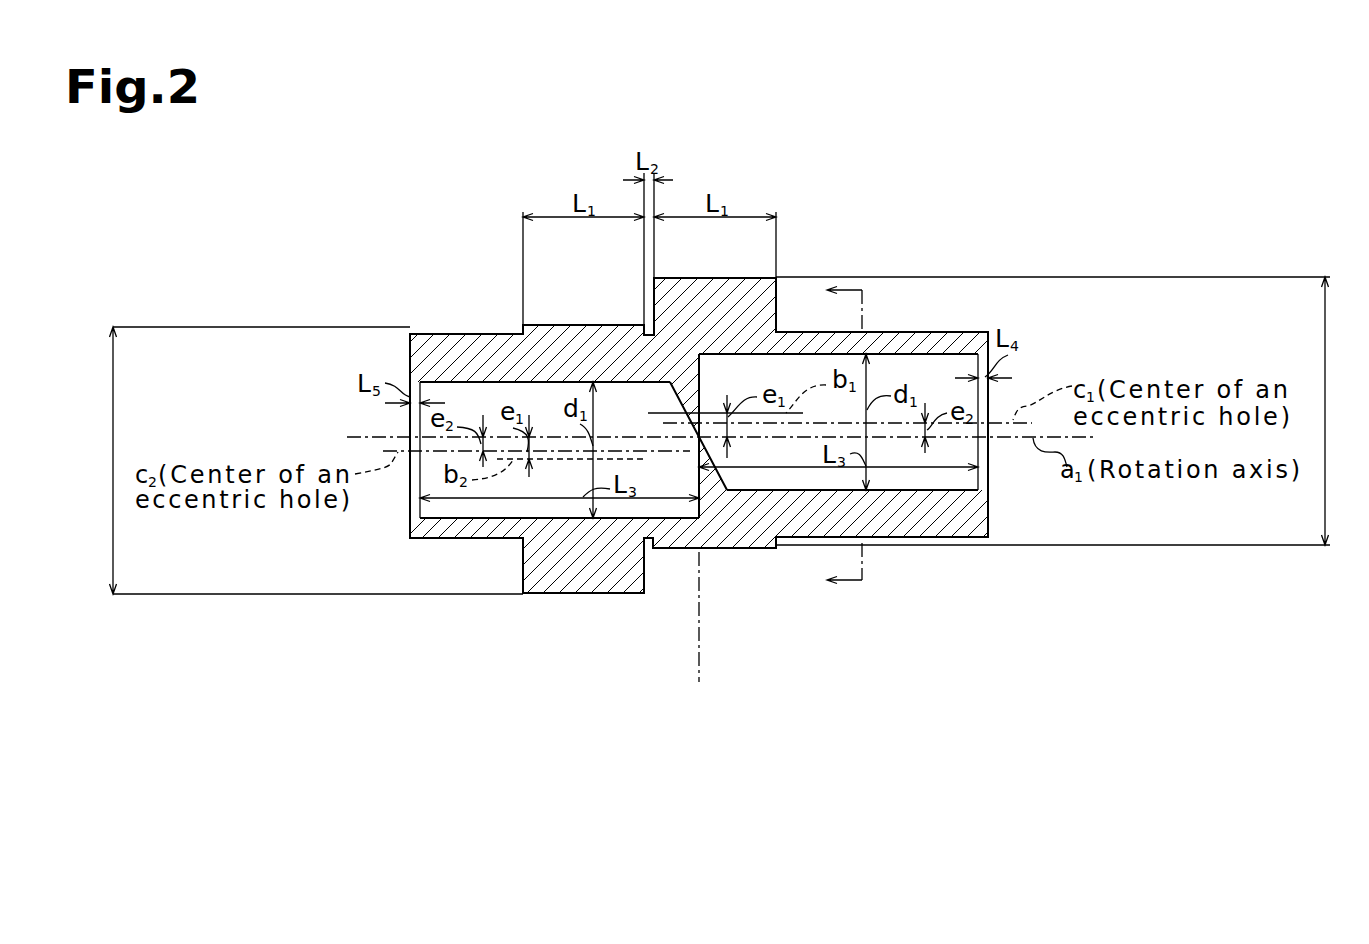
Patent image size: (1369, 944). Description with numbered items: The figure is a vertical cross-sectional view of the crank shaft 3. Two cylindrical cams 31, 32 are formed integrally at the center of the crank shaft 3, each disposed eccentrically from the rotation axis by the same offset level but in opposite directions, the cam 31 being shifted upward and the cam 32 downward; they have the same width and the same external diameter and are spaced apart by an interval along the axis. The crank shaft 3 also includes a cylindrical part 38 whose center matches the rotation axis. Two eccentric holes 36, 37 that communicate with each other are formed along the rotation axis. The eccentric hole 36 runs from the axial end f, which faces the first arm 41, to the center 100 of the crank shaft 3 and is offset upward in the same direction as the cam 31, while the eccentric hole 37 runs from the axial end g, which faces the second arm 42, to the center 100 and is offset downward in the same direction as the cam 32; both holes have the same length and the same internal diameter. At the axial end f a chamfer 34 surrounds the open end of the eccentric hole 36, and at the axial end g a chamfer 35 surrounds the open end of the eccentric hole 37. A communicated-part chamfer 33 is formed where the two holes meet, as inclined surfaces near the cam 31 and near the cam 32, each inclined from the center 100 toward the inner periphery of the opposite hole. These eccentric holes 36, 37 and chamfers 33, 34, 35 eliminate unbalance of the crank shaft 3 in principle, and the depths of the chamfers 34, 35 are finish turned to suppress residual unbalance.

The crank shaft 3 is at (898, 534).
The cam 31 is at (715, 549).
The cam 32 is at (578, 594).
The communicated-part chamfer 33 is at (688, 378).
The chamfer 34 is at (988, 487).
The chamfer 35 is at (412, 518).
The eccentric hole 36 is at (900, 350).
The eccentric hole 37 is at (443, 383).
The cylindrical part 38 is at (468, 539).
The first arm 41 is at (1070, 411).
The second arm 42 is at (305, 460).
The center 100 is at (698, 632).
The axial end f is at (988, 517).
The axial end g is at (410, 353).